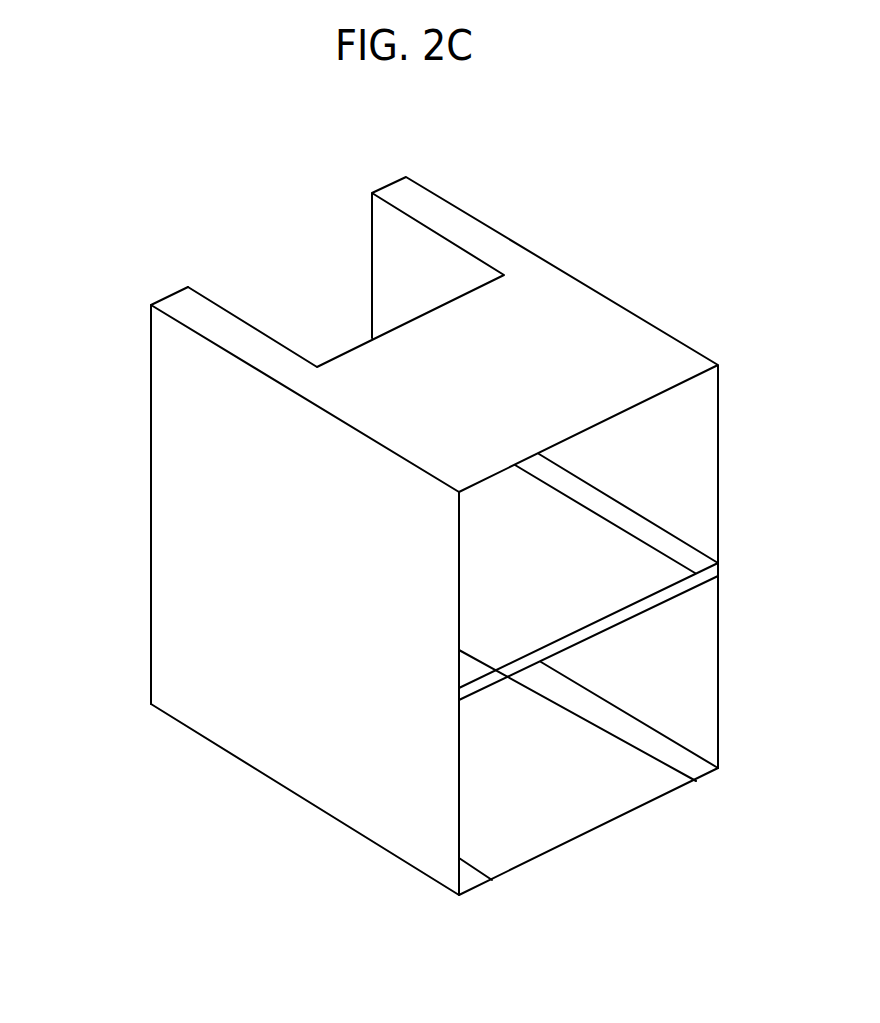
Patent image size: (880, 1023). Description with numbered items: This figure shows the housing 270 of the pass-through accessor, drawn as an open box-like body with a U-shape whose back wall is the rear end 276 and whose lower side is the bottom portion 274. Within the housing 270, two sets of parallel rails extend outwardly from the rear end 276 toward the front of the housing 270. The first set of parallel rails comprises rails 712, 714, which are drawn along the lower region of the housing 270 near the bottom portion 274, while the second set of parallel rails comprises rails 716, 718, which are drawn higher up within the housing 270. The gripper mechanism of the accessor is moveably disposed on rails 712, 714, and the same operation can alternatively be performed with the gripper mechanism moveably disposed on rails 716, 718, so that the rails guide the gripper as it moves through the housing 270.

The housing 270 is at (301, 811).
The bottom plate 274 is at (600, 830).
The rear end 276 is at (152, 587).
The rail 712 is at (473, 880).
The rail 714 is at (698, 768).
The rail 716 is at (478, 668).
The rail 718 is at (677, 551).